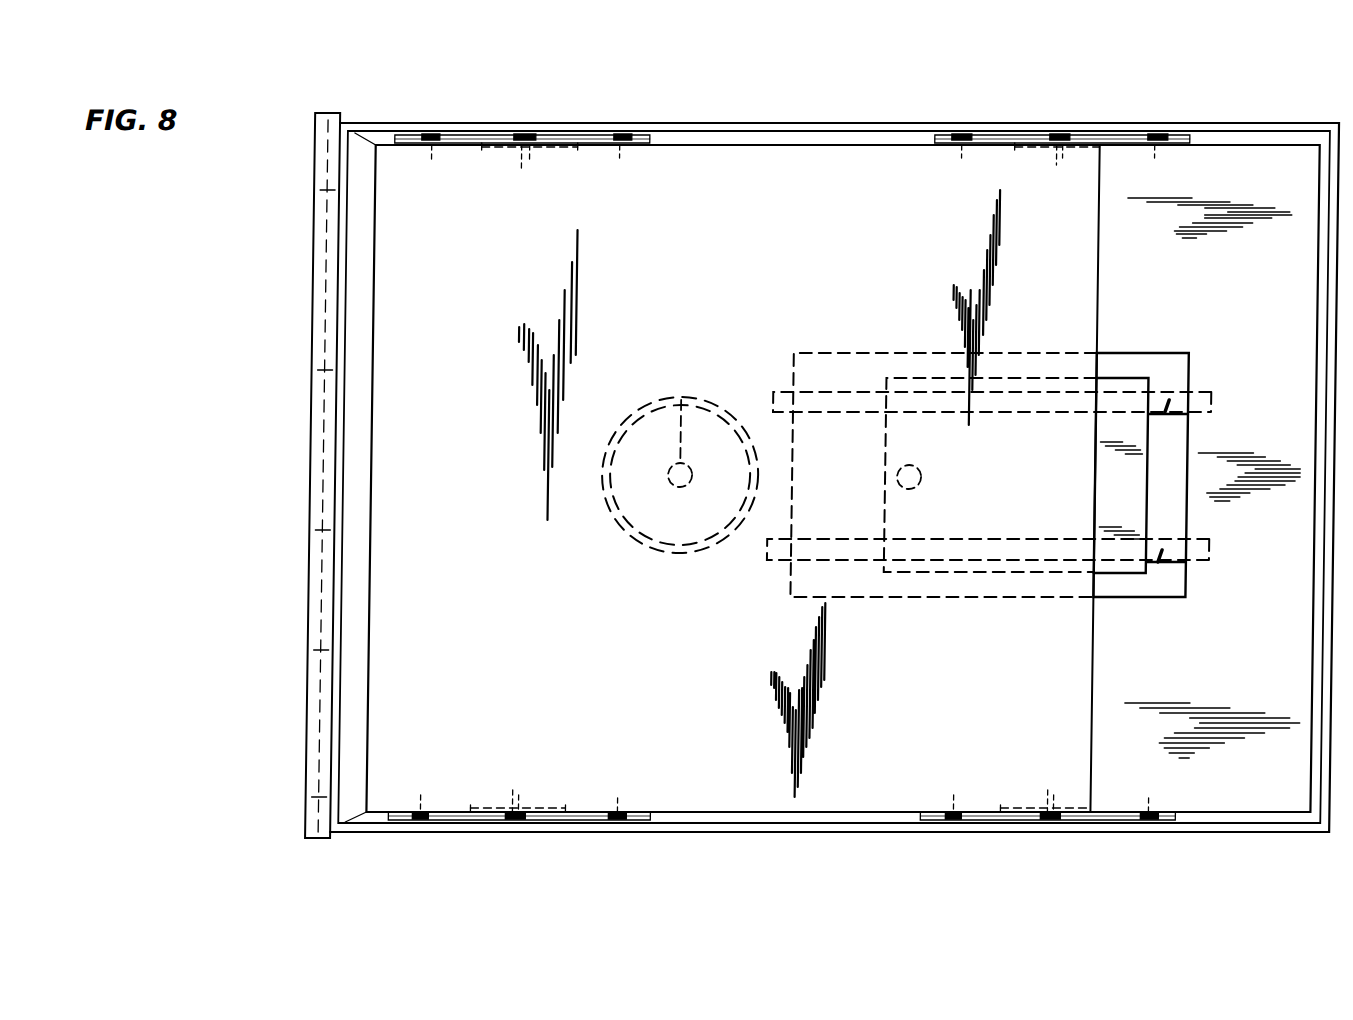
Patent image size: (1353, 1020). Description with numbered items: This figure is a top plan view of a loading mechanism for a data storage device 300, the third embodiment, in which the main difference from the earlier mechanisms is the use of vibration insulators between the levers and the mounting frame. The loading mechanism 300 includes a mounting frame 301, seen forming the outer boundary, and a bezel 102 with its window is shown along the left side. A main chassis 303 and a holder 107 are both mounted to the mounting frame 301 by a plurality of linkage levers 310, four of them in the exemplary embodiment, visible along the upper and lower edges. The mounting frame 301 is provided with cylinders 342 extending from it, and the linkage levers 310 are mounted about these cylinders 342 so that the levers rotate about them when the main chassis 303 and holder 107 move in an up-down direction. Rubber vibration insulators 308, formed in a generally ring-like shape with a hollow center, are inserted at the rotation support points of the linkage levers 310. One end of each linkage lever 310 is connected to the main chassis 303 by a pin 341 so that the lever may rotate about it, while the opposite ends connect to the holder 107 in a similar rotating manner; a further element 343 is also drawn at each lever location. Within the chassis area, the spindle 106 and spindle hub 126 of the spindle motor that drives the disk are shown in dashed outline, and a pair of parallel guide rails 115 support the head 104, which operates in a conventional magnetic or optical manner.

The loading mechanism for a data storage device 300 is at (305, 748).
The bezel 102 is at (328, 838).
The mounting frame 301 is at (1255, 838).
The main chassis 303 is at (1243, 168).
The holder 107 is at (676, 140).
The linkage lever 310 is at (458, 138).
The rubber vibration insulator 308 is at (558, 138).
The pin 341 is at (630, 152).
The cylinder 342 is at (530, 152).
The clip 343 is at (432, 152).
The head 104 is at (1128, 375).
The guide rail 115 is at (1207, 395).
The spindle 106 is at (680, 400).
The spindle hub 126 is at (661, 545).